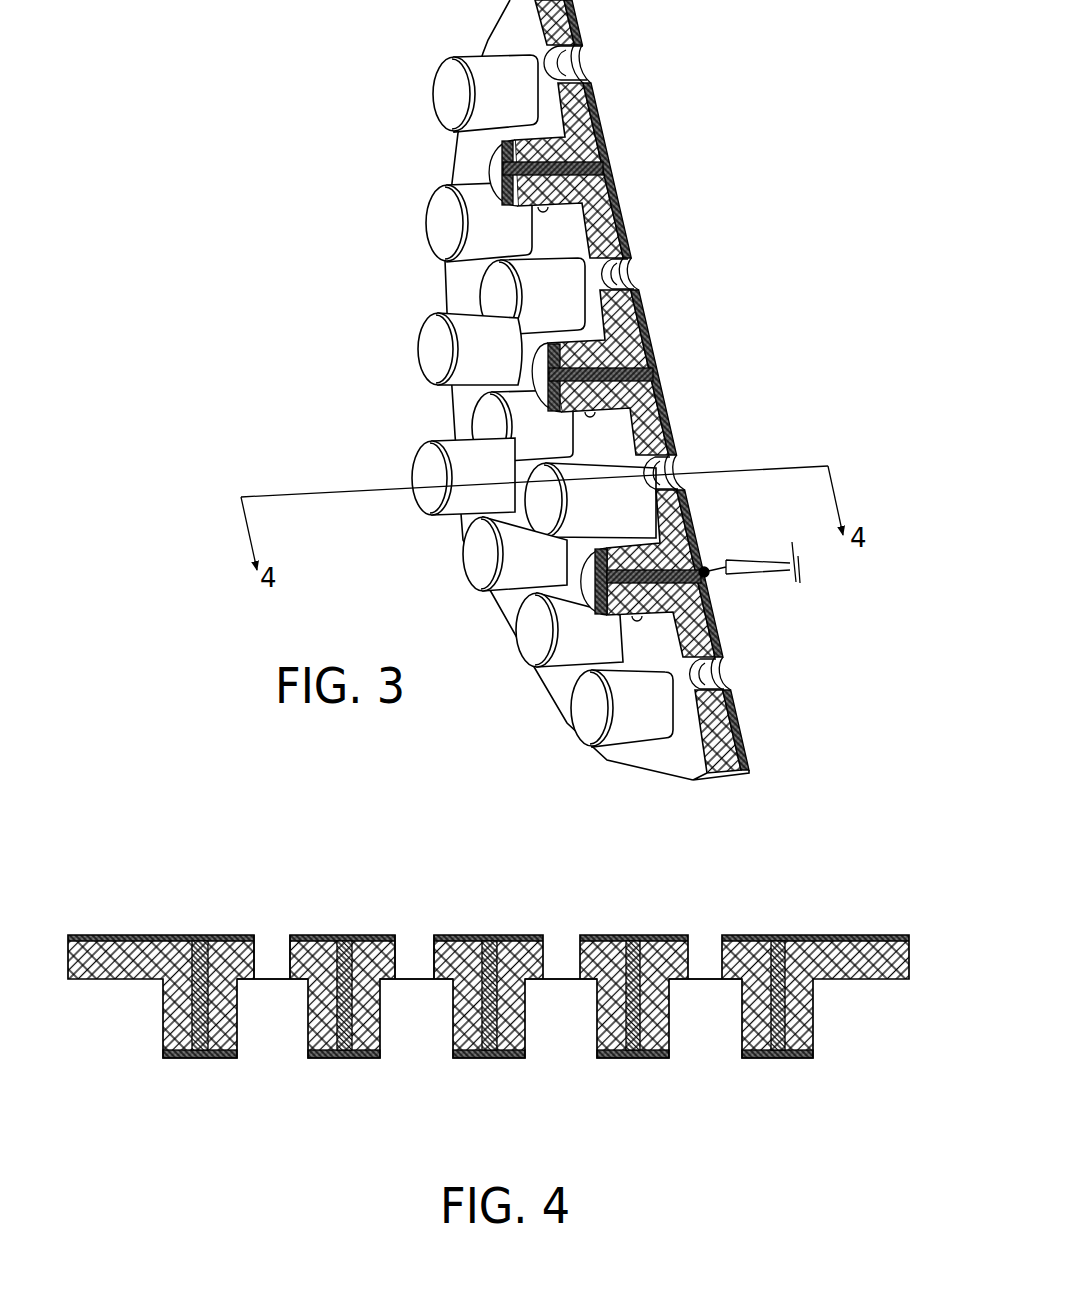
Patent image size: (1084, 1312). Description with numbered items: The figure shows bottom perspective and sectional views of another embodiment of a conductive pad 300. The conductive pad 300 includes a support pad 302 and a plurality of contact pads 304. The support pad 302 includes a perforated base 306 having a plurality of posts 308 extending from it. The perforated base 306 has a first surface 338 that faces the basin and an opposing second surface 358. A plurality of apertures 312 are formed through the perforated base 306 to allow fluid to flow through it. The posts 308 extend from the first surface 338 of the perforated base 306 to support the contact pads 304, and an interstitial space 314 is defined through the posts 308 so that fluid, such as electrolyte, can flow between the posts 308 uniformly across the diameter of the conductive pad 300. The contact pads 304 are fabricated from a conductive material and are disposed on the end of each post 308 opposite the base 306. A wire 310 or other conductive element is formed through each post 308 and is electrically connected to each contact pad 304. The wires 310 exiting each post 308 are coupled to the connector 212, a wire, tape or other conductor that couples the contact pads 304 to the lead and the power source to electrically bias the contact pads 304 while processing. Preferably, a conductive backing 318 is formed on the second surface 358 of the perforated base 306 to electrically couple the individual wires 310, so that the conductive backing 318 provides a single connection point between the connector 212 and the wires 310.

In FIG. 3, the conductive pad 300 is at (672, 426).
In FIG. 4, the conductive pad 300 is at (483, 946).
In FIG. 3, the support pad 302 is at (649, 368).
In FIG. 4, the support pad 302 is at (520, 962).
In FIG. 3, the contact pads 304 is at (440, 343).
In FIG. 4, the contact pads 304 is at (203, 1058).
In FIG. 3, the perforated base 306 is at (628, 208).
In FIG. 4, the perforated base 306 is at (238, 940).
In FIG. 4, the posts 308 is at (163, 1018).
In FIG. 3, the wire 310 is at (660, 384).
In FIG. 4, the wire 310 is at (190, 956).
In FIG. 3, the apertures 312 is at (620, 268).
In FIG. 4, the apertures 312 is at (308, 946).
In FIG. 3, the interstitial space 314 is at (622, 525).
In FIG. 4, the interstitial space 314 is at (558, 1034).
In FIG. 3, the conductive backing 318 is at (722, 634).
In FIG. 4, the conductive backing 318 is at (113, 937).
In FIG. 3, the first surface 338 is at (672, 754).
In FIG. 4, the first surface 338 is at (396, 979).
In FIG. 3, the second surface 358 is at (735, 769).
In FIG. 4, the second surface 358 is at (398, 956).
In FIG. 3, the connector 212 is at (795, 585).